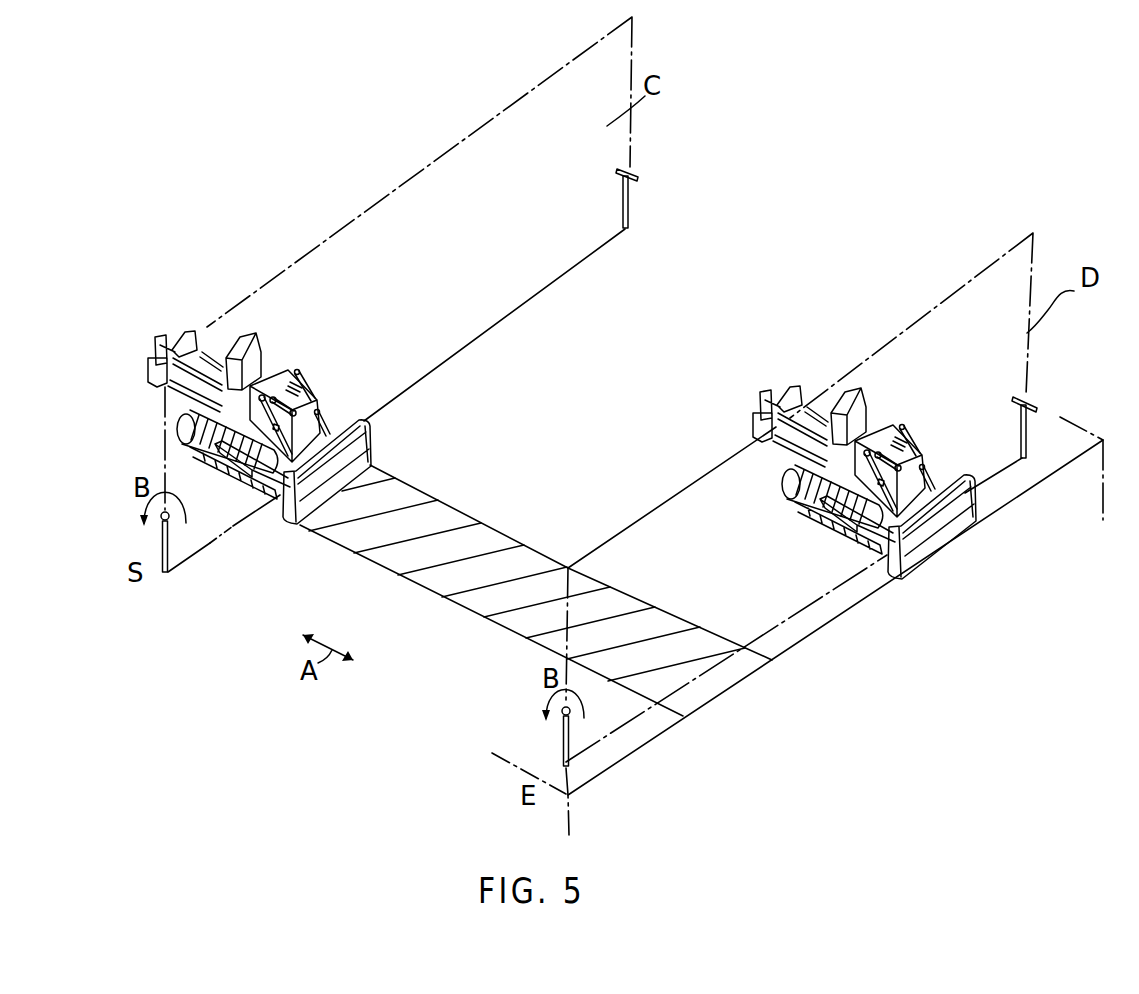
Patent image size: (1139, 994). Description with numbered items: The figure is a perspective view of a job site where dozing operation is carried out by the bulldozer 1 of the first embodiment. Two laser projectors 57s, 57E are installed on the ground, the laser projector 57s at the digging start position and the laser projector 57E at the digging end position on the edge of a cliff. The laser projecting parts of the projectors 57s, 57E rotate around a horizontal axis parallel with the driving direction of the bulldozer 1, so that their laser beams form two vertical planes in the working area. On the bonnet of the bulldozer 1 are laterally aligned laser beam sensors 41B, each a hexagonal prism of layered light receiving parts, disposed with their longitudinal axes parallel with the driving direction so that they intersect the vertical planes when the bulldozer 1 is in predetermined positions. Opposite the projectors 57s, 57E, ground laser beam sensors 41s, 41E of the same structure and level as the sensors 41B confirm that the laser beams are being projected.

The bulldozer 1 is at (247, 314).
The laser beam sensor 41B is at (299, 372).
The laser beam sensor 41s is at (627, 169).
The laser beam sensor 41E is at (1031, 404).
The laser projector 57s is at (168, 549).
The laser projector 57E is at (571, 745).